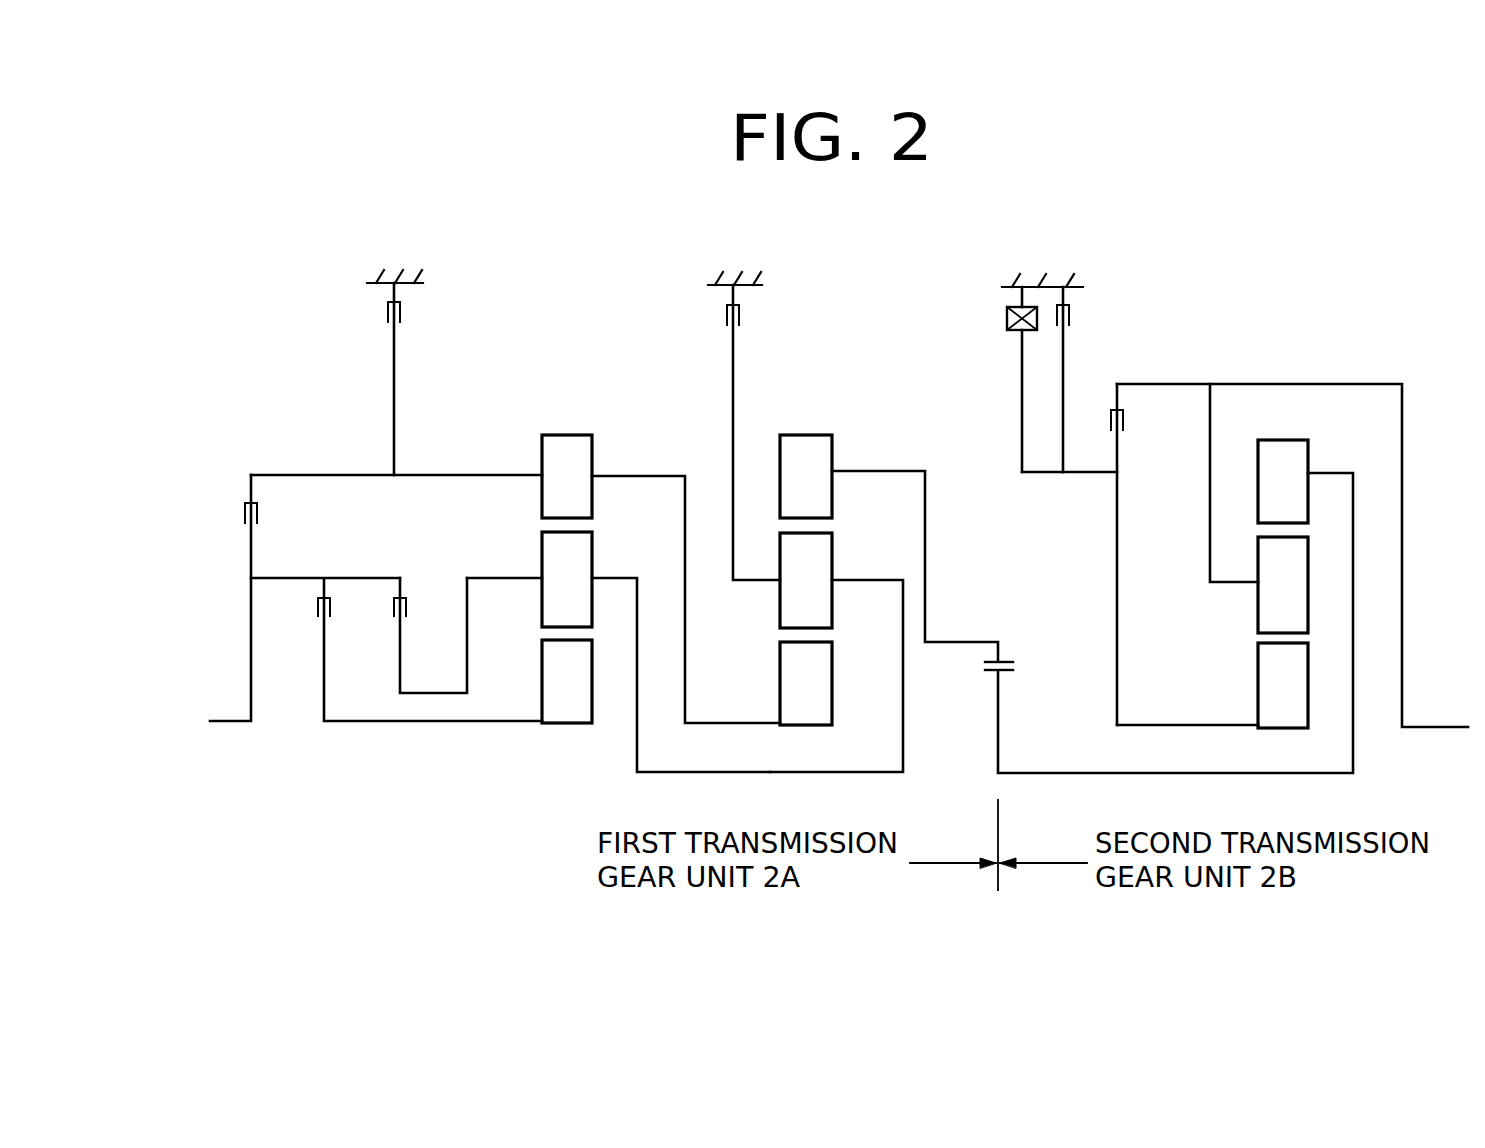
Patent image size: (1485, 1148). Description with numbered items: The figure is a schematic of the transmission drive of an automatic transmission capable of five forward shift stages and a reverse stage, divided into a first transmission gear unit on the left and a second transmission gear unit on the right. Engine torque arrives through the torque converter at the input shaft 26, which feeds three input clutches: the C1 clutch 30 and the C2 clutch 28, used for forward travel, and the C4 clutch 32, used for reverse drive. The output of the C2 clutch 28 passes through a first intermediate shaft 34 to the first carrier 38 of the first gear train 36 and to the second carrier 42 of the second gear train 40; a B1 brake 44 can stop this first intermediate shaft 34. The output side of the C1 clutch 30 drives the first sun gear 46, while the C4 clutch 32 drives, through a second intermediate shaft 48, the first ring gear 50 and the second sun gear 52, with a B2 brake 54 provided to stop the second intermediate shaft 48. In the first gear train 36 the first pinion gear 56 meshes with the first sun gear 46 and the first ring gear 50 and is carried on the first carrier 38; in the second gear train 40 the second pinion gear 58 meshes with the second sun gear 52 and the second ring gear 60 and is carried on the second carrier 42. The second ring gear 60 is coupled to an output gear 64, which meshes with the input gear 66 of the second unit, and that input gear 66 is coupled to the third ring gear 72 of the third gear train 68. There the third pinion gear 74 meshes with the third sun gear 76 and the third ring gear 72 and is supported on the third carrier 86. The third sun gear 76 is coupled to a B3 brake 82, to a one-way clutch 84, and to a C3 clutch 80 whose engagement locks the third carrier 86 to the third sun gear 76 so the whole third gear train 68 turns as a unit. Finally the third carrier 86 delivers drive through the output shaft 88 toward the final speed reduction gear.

The input shaft 26 is at (216, 720).
The C2 clutch 28 is at (406, 602).
The C1 clutch 30 is at (322, 610).
The C4 clutch 32 is at (246, 508).
The first intermediate shaft 34 is at (490, 578).
The first simple planetary gear train 36 is at (597, 552).
The first carrier 38 is at (637, 578).
The second simple planetary gear train 40 is at (842, 530).
The second carrier 42 is at (880, 580).
The B1 brake 44 is at (740, 316).
The first sun gear 46 is at (592, 700).
The second intermediate shaft 48 is at (322, 474).
The first ring gear 50 is at (592, 436).
The second sun gear 52 is at (832, 682).
The B2 brake 54 is at (402, 313).
The first pinion gear 56 is at (592, 540).
The second pinion gear 58 is at (832, 536).
The second ring gear 60 is at (832, 452).
The output gear 64 is at (1000, 662).
The input gear 66 is at (1000, 672).
The third simple planetary gear train 68 is at (1310, 522).
The third ring gear 72 is at (1308, 448).
The third pinion gear 74 is at (1308, 556).
The third sun gear 76 is at (1308, 666).
The C3 clutch 80 is at (1124, 420).
The B3 brake 82 is at (1072, 316).
The one-way clutch 84 is at (1005, 318).
The third carrier 86 is at (1214, 584).
The output shaft 88 is at (1438, 726).